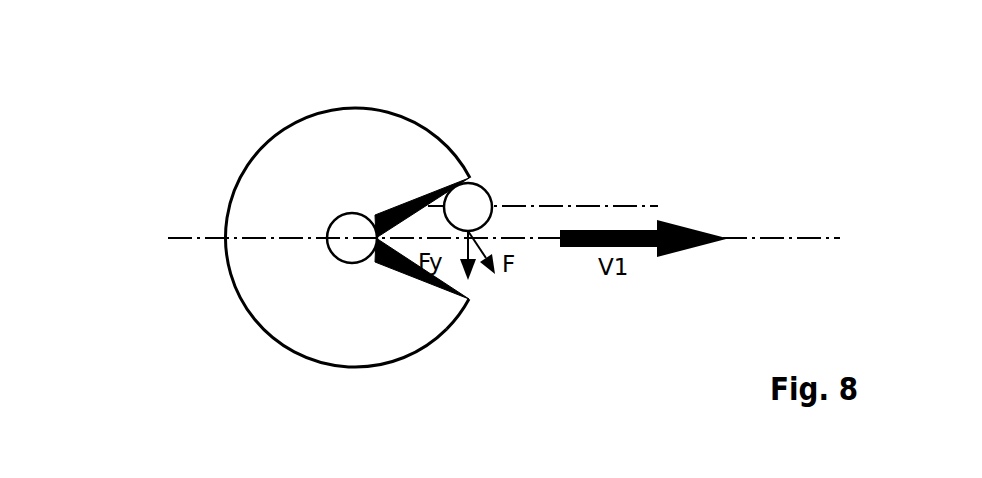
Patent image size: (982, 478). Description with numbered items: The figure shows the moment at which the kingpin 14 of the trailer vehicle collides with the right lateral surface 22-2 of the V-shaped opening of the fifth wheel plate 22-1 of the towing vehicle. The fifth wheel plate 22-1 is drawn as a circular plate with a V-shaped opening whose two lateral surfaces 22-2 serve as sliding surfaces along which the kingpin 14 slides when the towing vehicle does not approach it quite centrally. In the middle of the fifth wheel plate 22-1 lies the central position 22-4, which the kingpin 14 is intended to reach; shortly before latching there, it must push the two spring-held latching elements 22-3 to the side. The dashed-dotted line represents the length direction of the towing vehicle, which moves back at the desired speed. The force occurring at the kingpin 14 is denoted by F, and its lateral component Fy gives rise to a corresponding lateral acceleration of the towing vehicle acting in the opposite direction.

The fifth wheel plate 22-1 is at (345, 108).
The lateral surface 22-2 is at (468, 298).
The latching element 22-3 is at (392, 208).
The central position 22-4 is at (340, 225).
The kingpin 14 is at (480, 185).